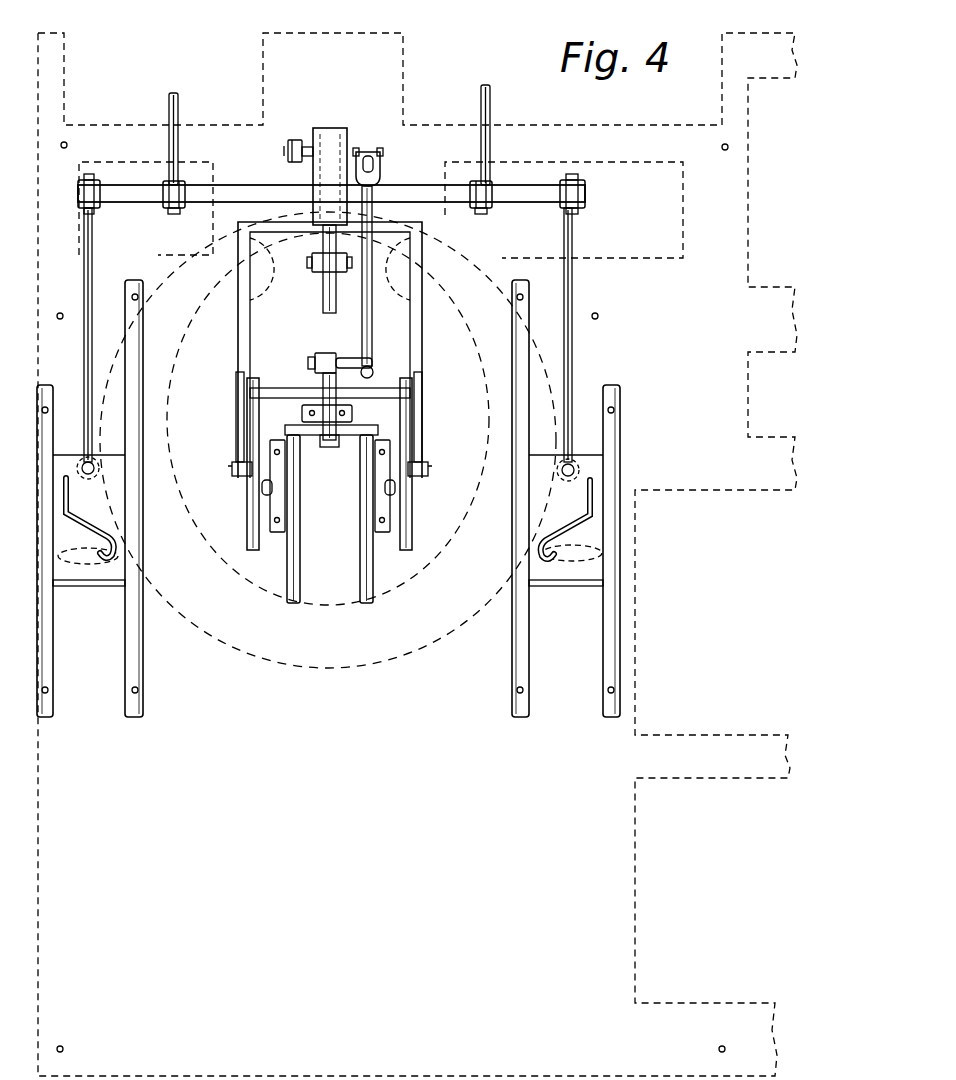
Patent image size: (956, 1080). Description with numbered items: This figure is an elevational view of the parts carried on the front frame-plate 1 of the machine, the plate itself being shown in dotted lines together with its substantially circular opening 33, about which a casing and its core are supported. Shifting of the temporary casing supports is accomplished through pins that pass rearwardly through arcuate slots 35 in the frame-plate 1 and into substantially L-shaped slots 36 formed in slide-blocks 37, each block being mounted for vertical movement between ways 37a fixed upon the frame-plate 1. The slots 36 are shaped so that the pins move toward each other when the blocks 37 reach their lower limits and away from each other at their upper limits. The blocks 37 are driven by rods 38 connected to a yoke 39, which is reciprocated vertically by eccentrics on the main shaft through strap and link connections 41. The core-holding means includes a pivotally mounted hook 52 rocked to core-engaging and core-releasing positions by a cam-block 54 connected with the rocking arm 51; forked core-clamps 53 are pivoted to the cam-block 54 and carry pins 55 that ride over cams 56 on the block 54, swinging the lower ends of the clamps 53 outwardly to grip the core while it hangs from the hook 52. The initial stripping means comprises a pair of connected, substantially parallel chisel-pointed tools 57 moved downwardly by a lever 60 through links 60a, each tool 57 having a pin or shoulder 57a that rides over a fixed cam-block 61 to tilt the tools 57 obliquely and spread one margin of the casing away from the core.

The front frame-plate 1 is at (636, 640).
The circular opening 33 is at (297, 666).
The arcuate slot 35 is at (90, 563).
The L-shaped slot 36 is at (62, 524).
The slide-block 37 is at (115, 568).
The ways 37a is at (125, 705).
The rods 38 is at (84, 353).
The yoke 39 is at (232, 192).
The strap and link connections 41 is at (178, 110).
The arm 51 is at (296, 138).
The hook 52 is at (323, 310).
The core-clamps 53 is at (428, 523).
The cam-block 54 is at (343, 130).
The pins 55 is at (375, 391).
The cams 56 is at (250, 418).
The chisel-pointed tools 57 is at (360, 583).
The pin or shoulder 57a is at (268, 490).
The lever 60 is at (370, 152).
The links 60a is at (372, 323).
The fixed cam-block 61 is at (285, 510).